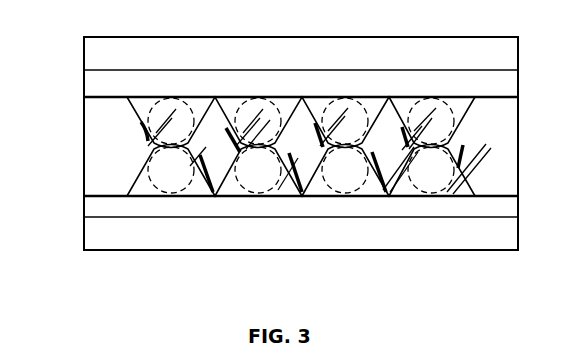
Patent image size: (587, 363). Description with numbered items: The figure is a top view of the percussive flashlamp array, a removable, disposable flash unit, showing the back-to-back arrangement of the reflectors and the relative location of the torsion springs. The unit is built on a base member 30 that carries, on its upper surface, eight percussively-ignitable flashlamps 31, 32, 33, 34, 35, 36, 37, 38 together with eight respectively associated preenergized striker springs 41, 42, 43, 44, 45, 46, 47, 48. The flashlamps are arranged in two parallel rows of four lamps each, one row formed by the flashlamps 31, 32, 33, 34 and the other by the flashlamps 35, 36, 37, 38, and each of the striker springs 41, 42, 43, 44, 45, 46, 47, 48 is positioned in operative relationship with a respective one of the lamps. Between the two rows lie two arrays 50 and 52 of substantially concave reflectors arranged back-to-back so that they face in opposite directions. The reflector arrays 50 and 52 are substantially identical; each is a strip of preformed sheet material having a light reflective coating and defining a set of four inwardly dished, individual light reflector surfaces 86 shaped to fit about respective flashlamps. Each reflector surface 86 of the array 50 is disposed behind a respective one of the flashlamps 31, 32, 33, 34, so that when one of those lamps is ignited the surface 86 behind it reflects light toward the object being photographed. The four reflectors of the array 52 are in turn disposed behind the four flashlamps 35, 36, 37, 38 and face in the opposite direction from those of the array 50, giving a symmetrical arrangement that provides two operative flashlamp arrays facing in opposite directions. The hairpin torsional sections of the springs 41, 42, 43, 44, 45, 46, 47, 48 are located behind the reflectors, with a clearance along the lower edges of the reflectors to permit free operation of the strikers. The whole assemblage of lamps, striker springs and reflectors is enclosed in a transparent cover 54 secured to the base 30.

The base member 30 is at (518, 57).
The percussively-ignitable flashlamp 31 is at (428, 194).
The percussively-ignitable flashlamp 32 is at (339, 194).
The percussively-ignitable flashlamp 33 is at (249, 194).
The percussively-ignitable flashlamp 34 is at (171, 194).
The percussively-ignitable flashlamp 35 is at (188, 94).
The percussively-ignitable flashlamp 36 is at (287, 95).
The percussively-ignitable flashlamp 37 is at (353, 95).
The percussively-ignitable flashlamp 38 is at (449, 95).
The preenergized striker spring 41 is at (463, 145).
The preenergized striker spring 42 is at (386, 194).
The preenergized striker spring 43 is at (301, 194).
The preenergized striker spring 44 is at (213, 194).
The preenergized striker spring 45 is at (143, 137).
The preenergized striker spring 46 is at (228, 135).
The preenergized striker spring 47 is at (315, 133).
The preenergized striker spring 48 is at (403, 135).
The reflector array 50 is at (508, 195).
The reflector array 52 is at (512, 98).
The transparent cover 54 is at (84, 160).
The light reflector surface 86 is at (216, 97).